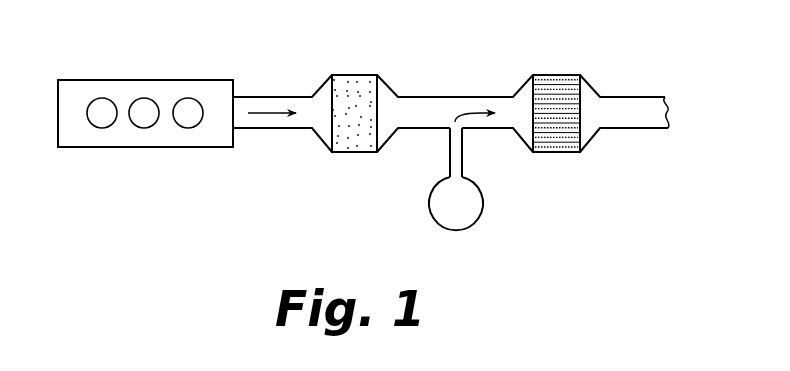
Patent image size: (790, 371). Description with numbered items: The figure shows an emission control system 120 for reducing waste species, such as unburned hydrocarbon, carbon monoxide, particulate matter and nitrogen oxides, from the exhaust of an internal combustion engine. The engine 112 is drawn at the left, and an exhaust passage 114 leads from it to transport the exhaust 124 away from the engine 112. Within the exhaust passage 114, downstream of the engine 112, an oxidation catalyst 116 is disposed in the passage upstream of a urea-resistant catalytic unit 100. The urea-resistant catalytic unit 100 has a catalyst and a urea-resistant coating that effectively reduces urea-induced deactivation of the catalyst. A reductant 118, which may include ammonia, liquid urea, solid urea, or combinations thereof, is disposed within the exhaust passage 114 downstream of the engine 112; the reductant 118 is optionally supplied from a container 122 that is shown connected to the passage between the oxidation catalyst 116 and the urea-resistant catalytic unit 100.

The urea-resistant catalytic unit 100 is at (564, 167).
The engine 112 is at (147, 158).
The exhaust passage 114 is at (273, 151).
The oxidation catalyst 116 is at (347, 70).
The reductant 118 is at (455, 97).
The emission control system 120 is at (273, 248).
The container 122 is at (470, 240).
The exhaust 124 is at (275, 97).